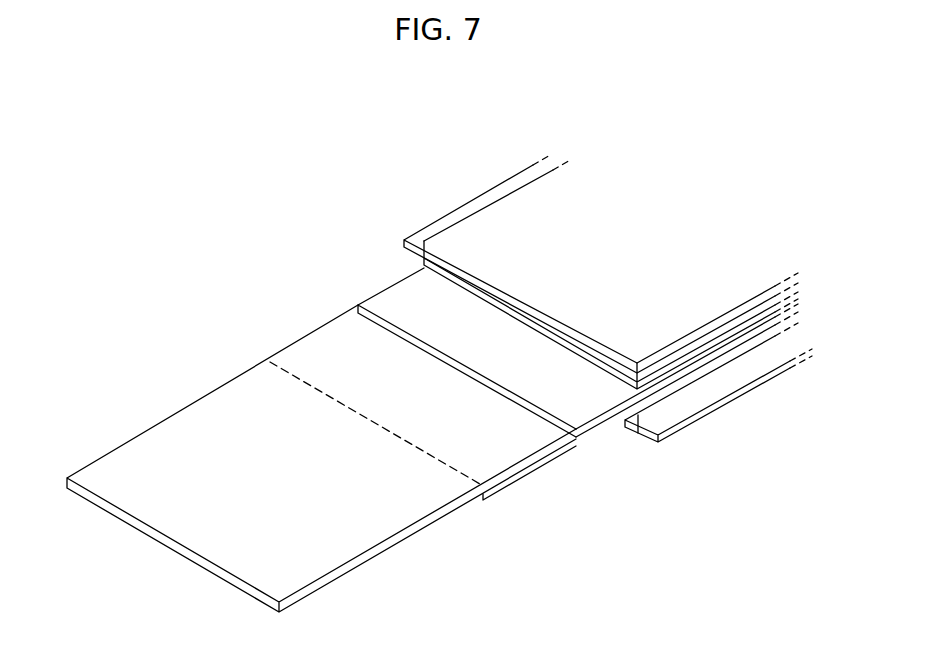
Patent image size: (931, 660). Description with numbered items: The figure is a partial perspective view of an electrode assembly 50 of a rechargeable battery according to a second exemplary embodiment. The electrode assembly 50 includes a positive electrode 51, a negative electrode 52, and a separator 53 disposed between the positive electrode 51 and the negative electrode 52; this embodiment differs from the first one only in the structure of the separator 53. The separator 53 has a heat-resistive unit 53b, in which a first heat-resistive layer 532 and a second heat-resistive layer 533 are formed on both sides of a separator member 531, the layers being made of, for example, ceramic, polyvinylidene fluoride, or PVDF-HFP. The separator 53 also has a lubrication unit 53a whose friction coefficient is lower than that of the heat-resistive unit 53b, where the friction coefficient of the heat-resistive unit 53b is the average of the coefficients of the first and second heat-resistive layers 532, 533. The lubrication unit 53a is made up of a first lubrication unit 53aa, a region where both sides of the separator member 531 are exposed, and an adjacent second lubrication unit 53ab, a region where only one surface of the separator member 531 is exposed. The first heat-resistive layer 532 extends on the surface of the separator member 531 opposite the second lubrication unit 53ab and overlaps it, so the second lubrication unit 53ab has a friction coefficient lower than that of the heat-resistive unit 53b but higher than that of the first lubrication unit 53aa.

The electrode assembly 50 is at (316, 163).
The positive electrode 51 is at (627, 437).
The negative electrode 52 is at (503, 210).
The separator 53 is at (397, 277).
The lubrication unit 53a is at (208, 323).
The first lubrication unit 53aa is at (258, 383).
The second lubrication unit 53ab is at (303, 360).
The heat-resistive unit 53b is at (381, 304).
The separator member 531 is at (367, 555).
The first heat-resistive layer 532 is at (497, 490).
The second heat-resistive layer 533 is at (580, 427).